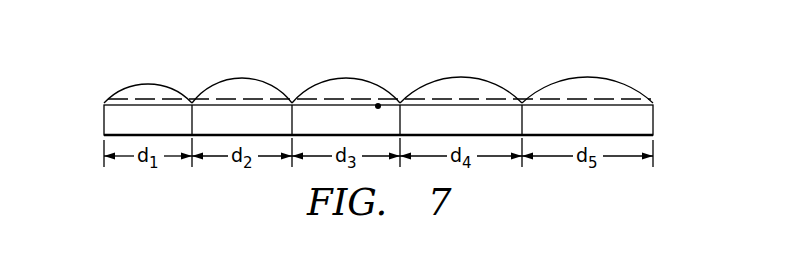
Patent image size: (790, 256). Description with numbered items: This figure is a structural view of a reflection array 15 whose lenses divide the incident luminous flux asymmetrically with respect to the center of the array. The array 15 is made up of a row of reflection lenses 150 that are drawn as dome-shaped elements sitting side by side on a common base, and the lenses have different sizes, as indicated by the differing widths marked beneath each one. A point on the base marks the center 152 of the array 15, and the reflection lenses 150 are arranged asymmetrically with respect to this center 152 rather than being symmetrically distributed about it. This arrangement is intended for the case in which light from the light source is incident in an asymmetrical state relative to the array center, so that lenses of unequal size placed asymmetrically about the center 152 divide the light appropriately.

The array 15 is at (90, 124).
The reflection lenses 150 is at (143, 83).
The center 152 is at (378, 105).